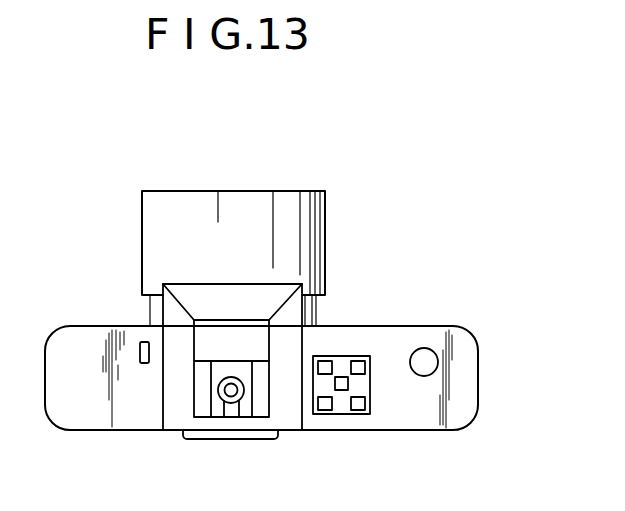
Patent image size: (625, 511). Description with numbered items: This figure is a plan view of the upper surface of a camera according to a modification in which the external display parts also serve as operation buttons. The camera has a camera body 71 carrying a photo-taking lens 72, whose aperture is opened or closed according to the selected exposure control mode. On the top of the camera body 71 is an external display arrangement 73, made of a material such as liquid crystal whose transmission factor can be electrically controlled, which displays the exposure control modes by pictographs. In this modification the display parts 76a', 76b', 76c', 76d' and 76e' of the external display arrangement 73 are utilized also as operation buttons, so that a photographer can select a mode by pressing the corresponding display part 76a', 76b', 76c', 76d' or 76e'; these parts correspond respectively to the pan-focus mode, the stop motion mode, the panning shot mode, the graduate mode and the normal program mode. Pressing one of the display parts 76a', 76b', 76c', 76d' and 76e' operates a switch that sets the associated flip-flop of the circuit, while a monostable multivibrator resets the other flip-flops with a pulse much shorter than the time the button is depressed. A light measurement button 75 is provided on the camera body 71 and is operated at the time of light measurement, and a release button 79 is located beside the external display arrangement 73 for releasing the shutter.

The camera body 71 is at (466, 390).
The photo-taking lens 72 is at (290, 201).
The external display arrangement 73 is at (393, 348).
The light measurement button 75 is at (140, 346).
The external display part 76a' is at (340, 331).
The external display part 76b' is at (322, 437).
The external display part 76c' is at (363, 437).
The external display part 76d' is at (367, 313).
The external display part 76e' is at (379, 427).
The release button 79 is at (428, 356).